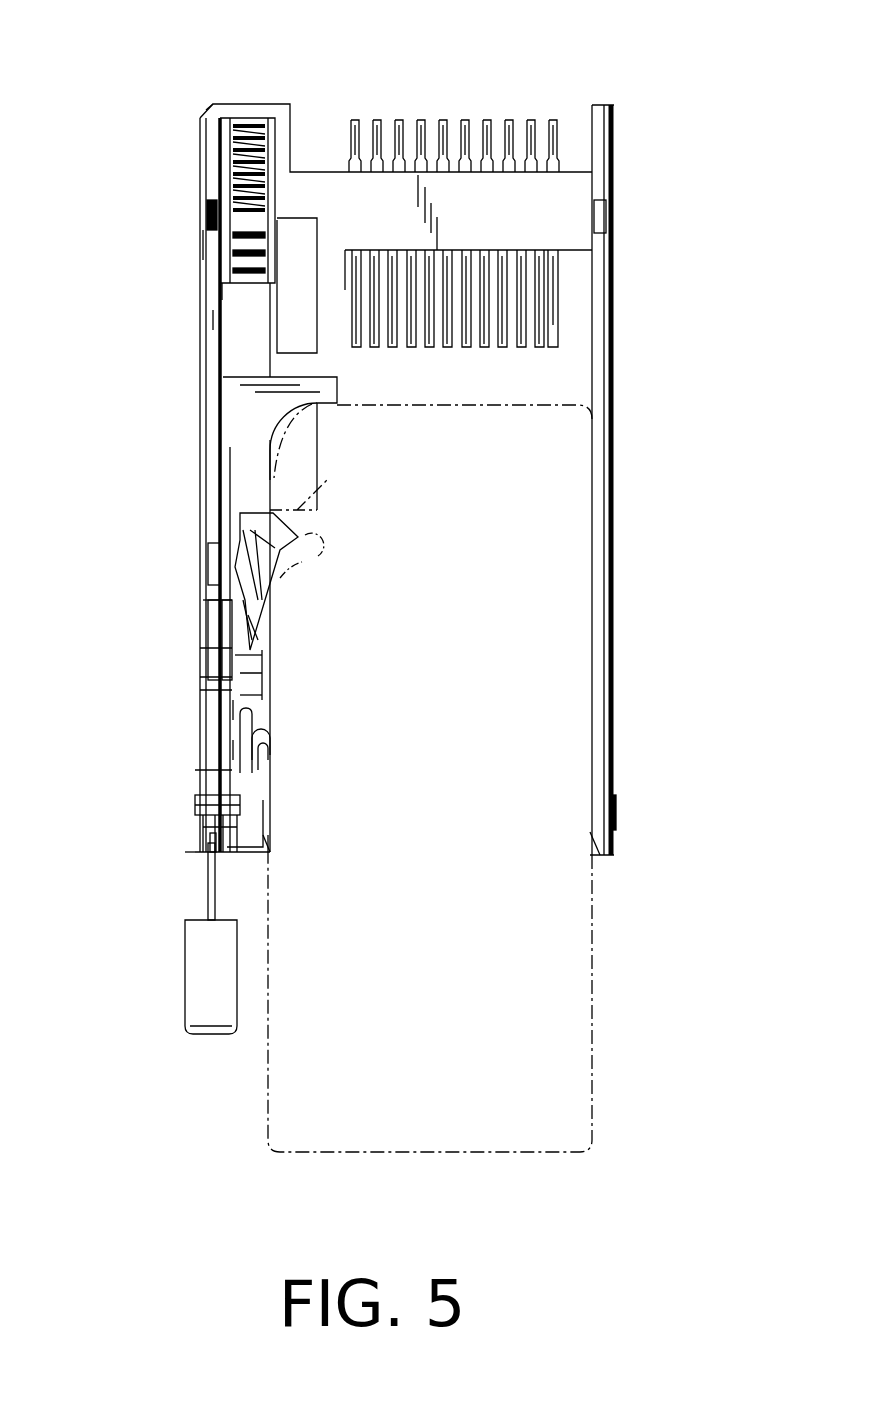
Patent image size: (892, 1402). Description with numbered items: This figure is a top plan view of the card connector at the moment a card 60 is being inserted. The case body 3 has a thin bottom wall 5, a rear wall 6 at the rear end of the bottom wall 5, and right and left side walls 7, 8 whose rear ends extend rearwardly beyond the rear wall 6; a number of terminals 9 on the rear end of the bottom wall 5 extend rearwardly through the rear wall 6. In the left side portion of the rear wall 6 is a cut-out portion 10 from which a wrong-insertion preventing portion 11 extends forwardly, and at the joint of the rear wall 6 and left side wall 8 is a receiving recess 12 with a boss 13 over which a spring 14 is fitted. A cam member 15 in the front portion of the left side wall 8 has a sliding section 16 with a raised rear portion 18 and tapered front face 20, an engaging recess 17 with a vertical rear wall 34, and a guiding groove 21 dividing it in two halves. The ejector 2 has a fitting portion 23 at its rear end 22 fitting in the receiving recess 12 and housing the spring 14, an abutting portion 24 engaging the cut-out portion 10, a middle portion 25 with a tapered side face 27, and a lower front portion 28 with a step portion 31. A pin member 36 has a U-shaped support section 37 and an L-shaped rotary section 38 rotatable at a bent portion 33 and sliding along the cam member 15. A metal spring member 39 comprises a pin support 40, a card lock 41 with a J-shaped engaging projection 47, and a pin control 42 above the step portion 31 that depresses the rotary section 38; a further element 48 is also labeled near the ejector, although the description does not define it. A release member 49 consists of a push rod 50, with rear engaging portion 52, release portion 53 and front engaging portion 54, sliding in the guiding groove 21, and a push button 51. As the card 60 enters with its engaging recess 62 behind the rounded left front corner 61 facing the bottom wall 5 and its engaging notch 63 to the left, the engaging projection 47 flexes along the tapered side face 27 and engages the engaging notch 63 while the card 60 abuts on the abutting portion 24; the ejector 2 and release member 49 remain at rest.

The ejector 2 is at (252, 305).
The case body 3 is at (617, 356).
The bottom wall 5 is at (570, 366).
The rear wall 6 is at (517, 212).
The right side wall 7 is at (618, 528).
The left side wall 8 is at (200, 243).
The terminals 9 is at (354, 120).
The cut-out portion 10 is at (206, 210).
The wrong-insertion preventing portion 11 is at (340, 290).
The receiving recess 12 is at (226, 120).
The boss 13 is at (245, 120).
The spring 14 is at (219, 133).
The cam member 15 is at (198, 684).
The sliding section 16 is at (195, 771).
The engaging recess 17 is at (197, 633).
The raised rear portion 18 is at (207, 667).
The tapered front face 20 is at (241, 701).
The guiding groove 21 is at (240, 801).
The rear end 22 is at (216, 319).
The fitting portion 23 is at (236, 290).
The abutting portion 24 is at (314, 387).
The middle portion 25 is at (270, 533).
The tapered side face 27 is at (249, 623).
The front portion 28 is at (275, 856).
The step portion 31 is at (272, 846).
The bent portion 33 is at (271, 733).
The vertical rear wall 34 is at (205, 625).
The pin member 36 is at (270, 760).
The support section 37 is at (274, 758).
The rotary section 38 is at (197, 798).
The spring member 39 is at (260, 675).
The pin support 40 is at (233, 708).
The card lock 41 is at (244, 610).
The pin control 42 is at (233, 747).
The engaging projection 47 is at (314, 549).
The holding portion 48 is at (203, 822).
The release member 49 is at (240, 1009).
The push rod 50 is at (223, 894).
The push button 51 is at (220, 978).
The rear engaging portion 52 is at (212, 582).
The release portion 53 is at (238, 654).
The front engaging portion 54 is at (210, 859).
The card 60 is at (598, 1026).
The rounded left front corner 61 is at (275, 428).
The engaging recess 62 is at (320, 496).
The engaging notch 63 is at (280, 578).